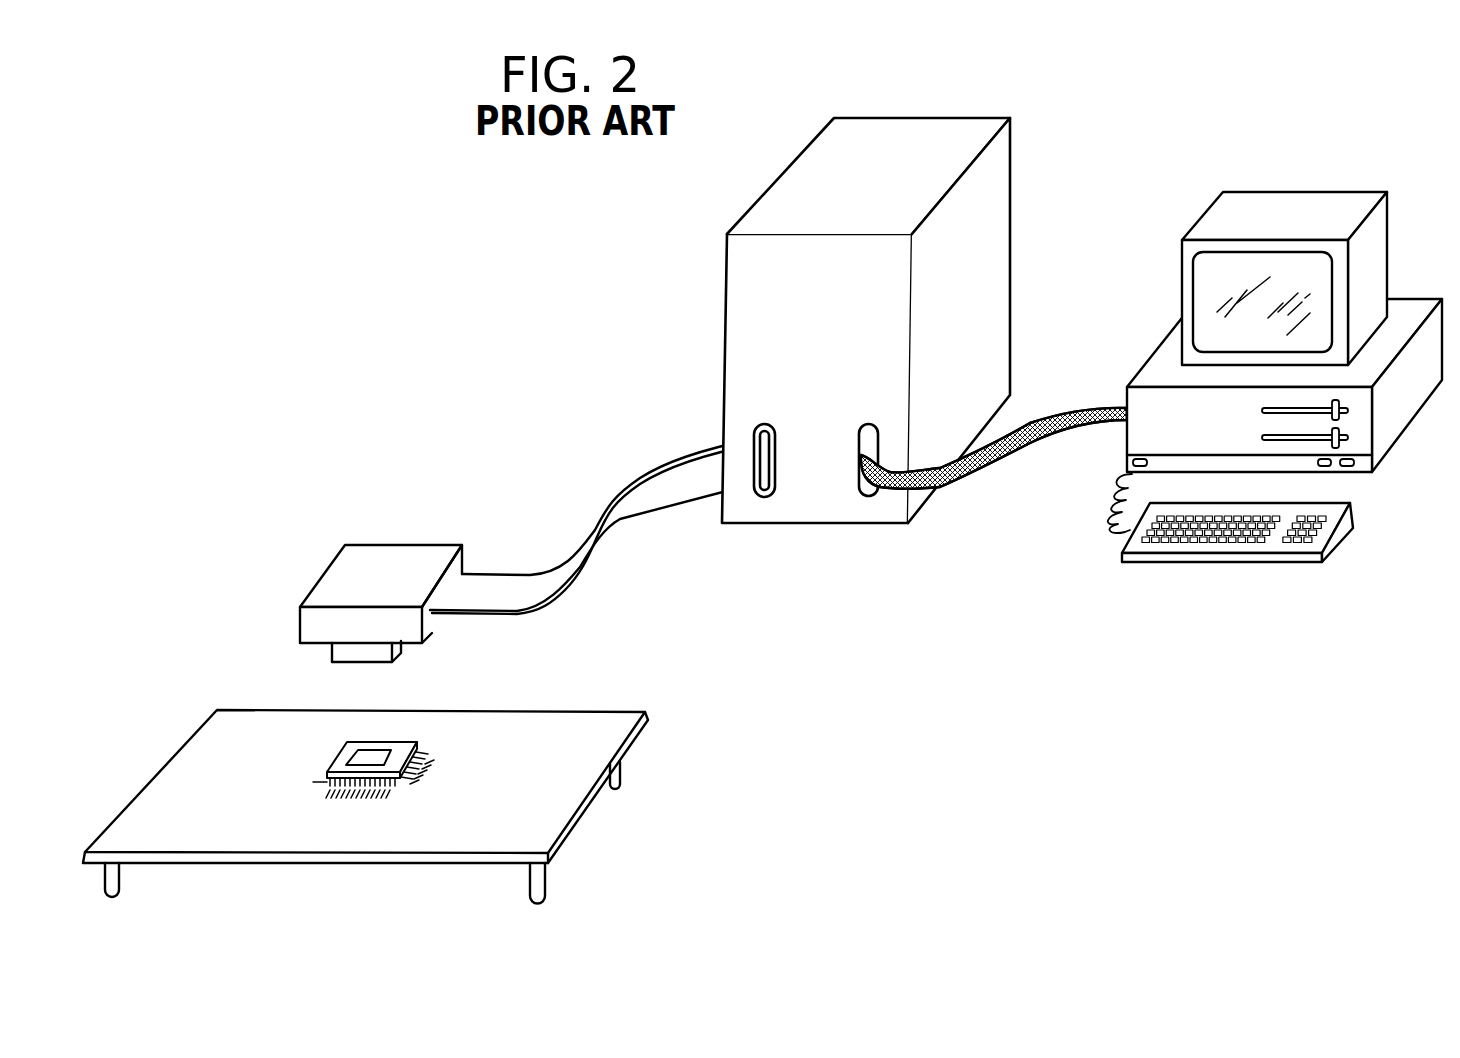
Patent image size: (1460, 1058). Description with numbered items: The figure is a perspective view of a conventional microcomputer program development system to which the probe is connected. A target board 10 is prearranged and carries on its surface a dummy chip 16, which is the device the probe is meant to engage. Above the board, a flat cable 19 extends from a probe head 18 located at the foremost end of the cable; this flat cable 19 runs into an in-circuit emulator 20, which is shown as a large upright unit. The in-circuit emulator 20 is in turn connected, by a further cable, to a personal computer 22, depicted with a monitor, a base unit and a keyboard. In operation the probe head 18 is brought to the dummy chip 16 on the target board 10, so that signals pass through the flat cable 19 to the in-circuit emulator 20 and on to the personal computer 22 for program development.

The target board 10 is at (587, 810).
The dummy chip 16 is at (408, 740).
The probe head 18 is at (398, 556).
The flat cable 19 is at (653, 470).
The in-circuit emulator 20 is at (1001, 164).
The personal computer 22 is at (1158, 337).